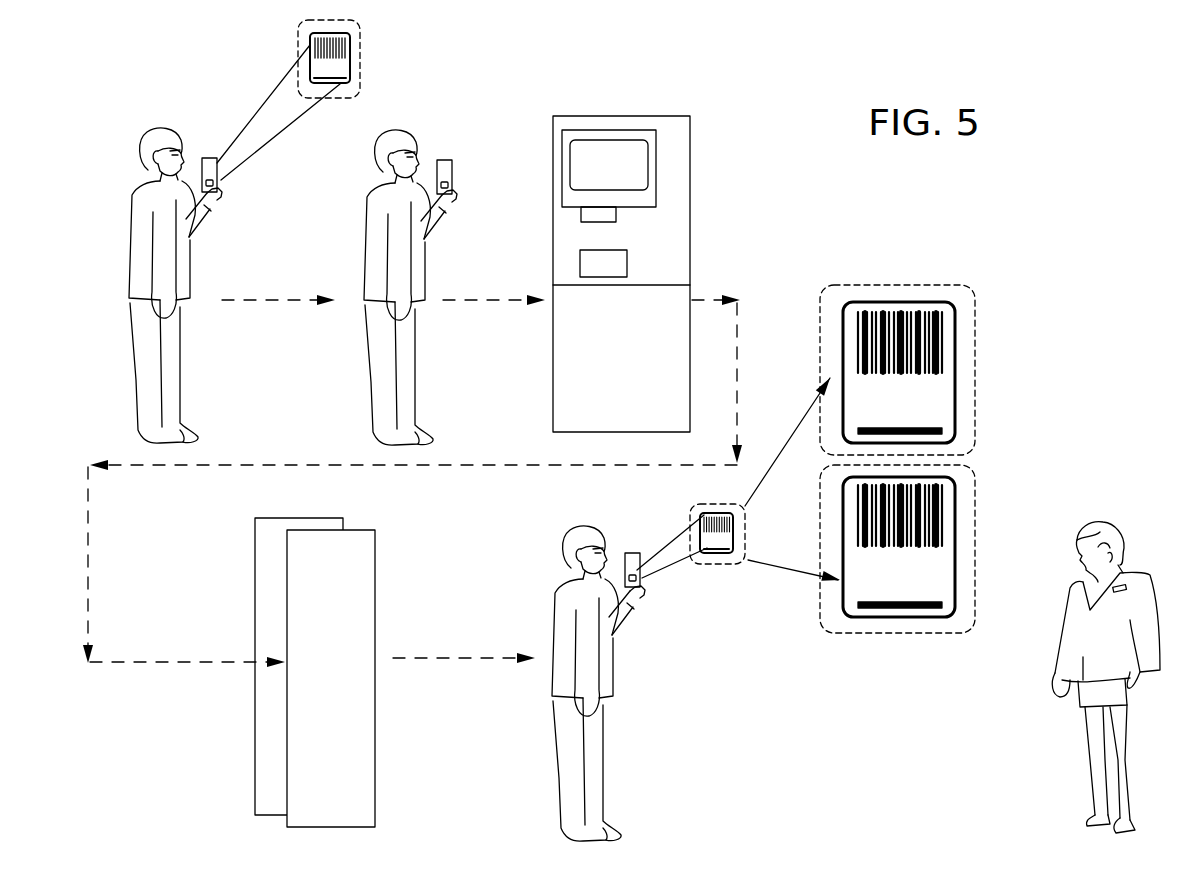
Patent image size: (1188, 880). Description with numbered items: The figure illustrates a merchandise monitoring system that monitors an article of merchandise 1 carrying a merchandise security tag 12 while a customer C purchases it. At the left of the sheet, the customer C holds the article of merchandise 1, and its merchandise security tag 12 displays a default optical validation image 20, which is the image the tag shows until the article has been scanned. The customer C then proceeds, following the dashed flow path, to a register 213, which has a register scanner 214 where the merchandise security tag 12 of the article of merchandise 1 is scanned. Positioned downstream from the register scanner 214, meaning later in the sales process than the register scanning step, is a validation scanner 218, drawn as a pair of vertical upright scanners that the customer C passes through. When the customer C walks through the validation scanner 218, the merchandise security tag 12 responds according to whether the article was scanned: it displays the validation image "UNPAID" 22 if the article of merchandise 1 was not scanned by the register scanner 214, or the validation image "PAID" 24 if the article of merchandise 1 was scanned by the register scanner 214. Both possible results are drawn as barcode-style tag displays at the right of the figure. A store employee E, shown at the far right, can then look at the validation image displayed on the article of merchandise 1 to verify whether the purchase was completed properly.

The article of merchandise 1 is at (205, 157).
The merchandise security tag 12 is at (657, 334).
The default optical validation image 20 is at (345, 72).
The validation image "UNPAID" 22 is at (942, 423).
The validation image "PAID" 24 is at (937, 569).
The register 213 is at (646, 274).
The register scanner 214 is at (612, 259).
The validation scanner 218 is at (300, 562).
The customer C is at (128, 228).
The store employee E is at (1136, 572).